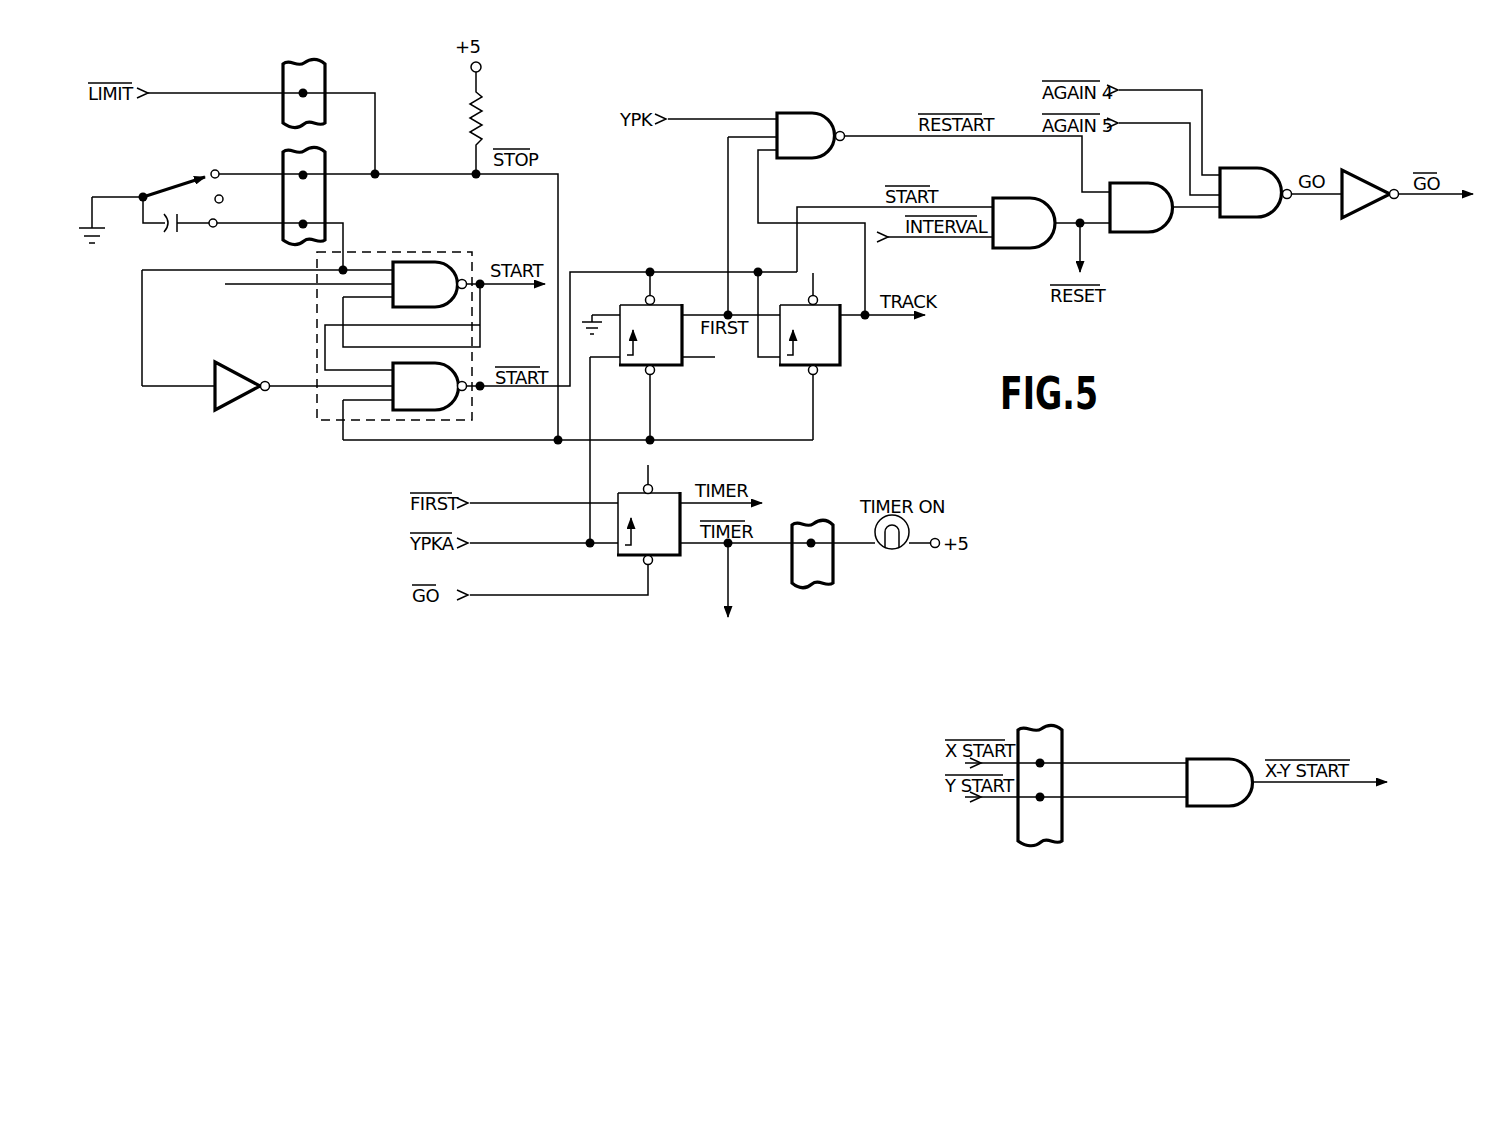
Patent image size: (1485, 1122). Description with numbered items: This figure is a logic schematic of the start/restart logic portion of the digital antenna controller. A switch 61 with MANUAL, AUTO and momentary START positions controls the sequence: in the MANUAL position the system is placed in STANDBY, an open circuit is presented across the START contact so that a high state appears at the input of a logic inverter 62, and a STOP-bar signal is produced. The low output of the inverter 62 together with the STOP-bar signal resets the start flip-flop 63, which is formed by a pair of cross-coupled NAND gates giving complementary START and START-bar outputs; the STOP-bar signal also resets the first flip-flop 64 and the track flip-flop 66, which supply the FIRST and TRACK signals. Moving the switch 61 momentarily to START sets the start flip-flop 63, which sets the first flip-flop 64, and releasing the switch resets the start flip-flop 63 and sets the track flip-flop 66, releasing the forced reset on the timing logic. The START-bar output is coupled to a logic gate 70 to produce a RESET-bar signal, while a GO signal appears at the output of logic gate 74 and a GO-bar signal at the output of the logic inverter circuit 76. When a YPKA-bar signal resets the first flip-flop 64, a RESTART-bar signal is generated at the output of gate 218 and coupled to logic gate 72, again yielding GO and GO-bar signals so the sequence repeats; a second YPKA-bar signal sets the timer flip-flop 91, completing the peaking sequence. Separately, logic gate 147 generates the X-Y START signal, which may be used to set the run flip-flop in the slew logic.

The switch 61 is at (158, 172).
The logic inverter 62 is at (264, 358).
The start flip-flop 63 is at (432, 240).
The first flip-flop 64 is at (690, 294).
The track flip-flop 66 is at (848, 294).
The logic gate 70 is at (1022, 200).
The logic gate 72 is at (1140, 188).
The logic gate 74 is at (1260, 176).
The logic inverter circuit 76 is at (1386, 178).
The timer flip-flop 91 is at (684, 483).
The logic gate 147 is at (1222, 806).
The gate 218 is at (834, 106).